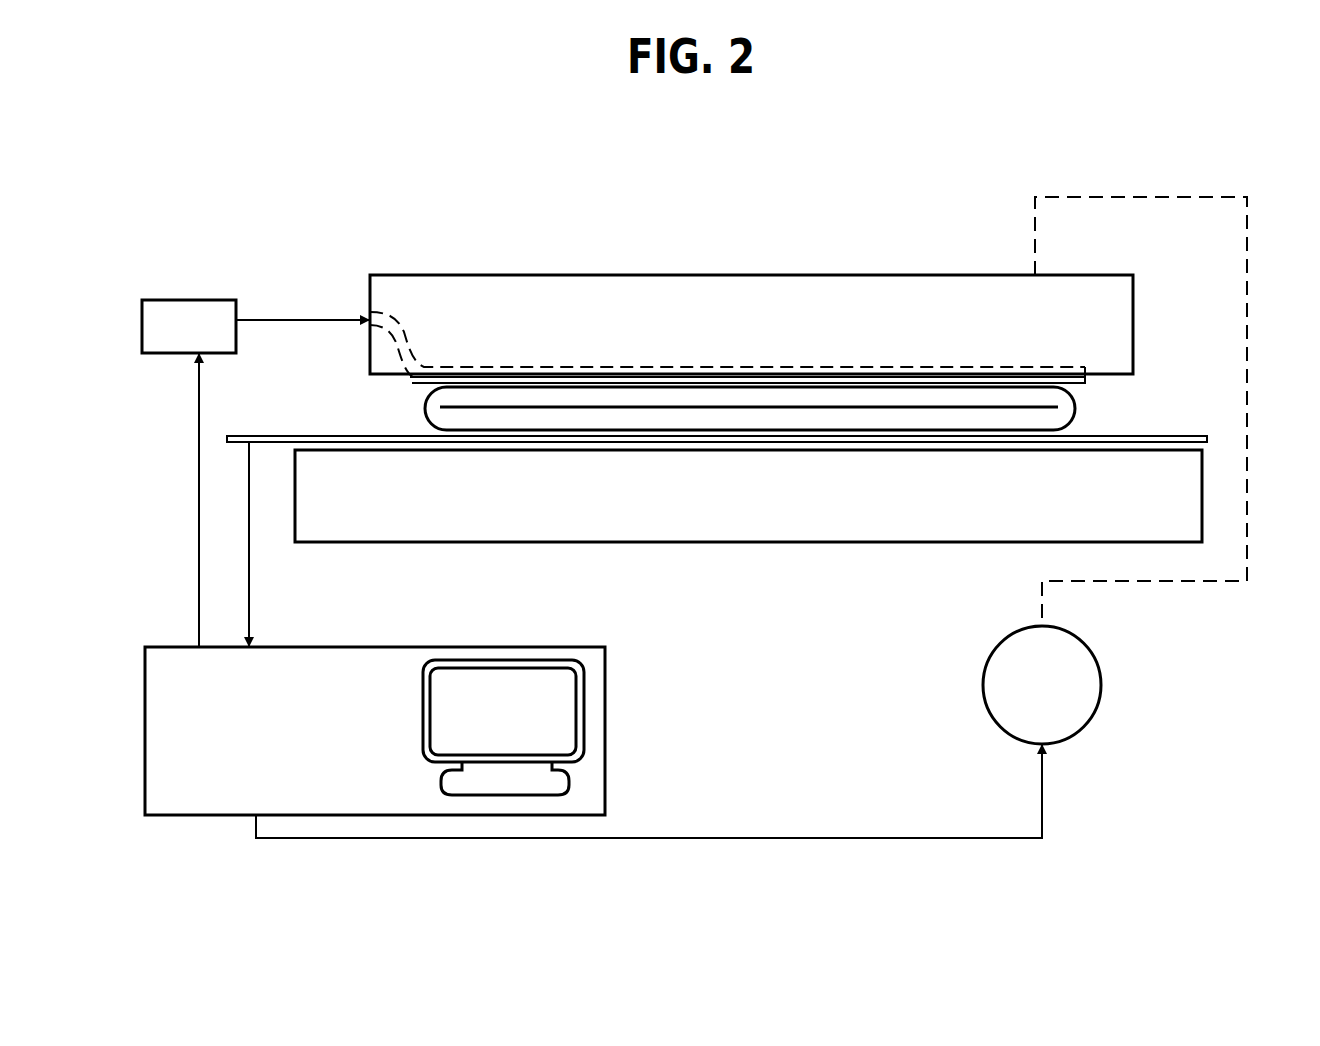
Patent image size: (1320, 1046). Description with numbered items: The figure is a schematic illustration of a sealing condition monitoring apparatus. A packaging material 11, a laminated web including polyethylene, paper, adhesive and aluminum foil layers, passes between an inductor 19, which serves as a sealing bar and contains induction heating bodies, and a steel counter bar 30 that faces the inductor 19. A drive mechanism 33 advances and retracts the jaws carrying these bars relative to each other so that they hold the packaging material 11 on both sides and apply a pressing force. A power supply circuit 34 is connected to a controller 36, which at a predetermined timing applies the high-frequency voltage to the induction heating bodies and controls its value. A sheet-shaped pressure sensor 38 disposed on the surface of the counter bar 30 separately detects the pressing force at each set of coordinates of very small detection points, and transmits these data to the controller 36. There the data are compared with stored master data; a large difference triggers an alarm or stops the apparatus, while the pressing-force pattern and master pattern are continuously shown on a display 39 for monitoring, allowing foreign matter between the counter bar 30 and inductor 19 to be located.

The packaging material 11 is at (1077, 400).
The inductor 19 is at (740, 275).
The counter bar 30 is at (775, 545).
The drive mechanism 33 is at (1101, 690).
The power supply circuit 34 is at (213, 300).
The controller 36 is at (222, 815).
The sheet-shaped pressure sensor 38 is at (1207, 438).
The display 39 is at (584, 705).